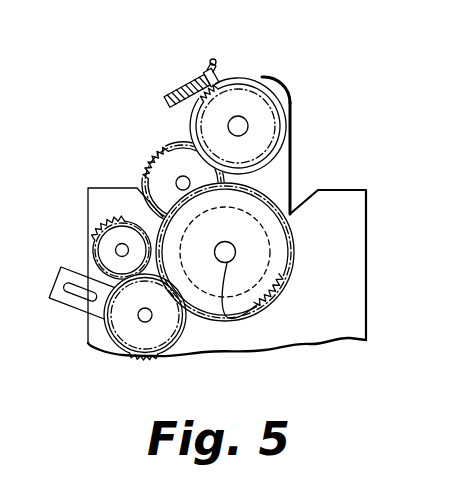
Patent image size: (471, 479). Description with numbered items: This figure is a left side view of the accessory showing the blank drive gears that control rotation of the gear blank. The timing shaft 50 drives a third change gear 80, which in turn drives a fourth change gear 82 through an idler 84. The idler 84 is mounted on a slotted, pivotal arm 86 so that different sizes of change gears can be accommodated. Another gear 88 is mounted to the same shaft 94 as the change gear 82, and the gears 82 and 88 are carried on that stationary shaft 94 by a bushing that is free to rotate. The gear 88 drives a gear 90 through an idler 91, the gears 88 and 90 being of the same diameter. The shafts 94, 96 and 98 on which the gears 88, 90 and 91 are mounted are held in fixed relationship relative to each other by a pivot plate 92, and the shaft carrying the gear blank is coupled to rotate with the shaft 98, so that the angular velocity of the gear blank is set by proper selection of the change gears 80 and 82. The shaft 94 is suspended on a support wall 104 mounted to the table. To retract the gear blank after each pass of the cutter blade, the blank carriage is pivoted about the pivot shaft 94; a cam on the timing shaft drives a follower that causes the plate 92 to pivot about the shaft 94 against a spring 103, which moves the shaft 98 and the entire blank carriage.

The timing shaft 50 is at (128, 219).
The third change gear 80 is at (105, 221).
The fourth change gear 82 is at (282, 279).
The idler 84 is at (126, 355).
The slotted, pivotal arm 86 is at (75, 267).
The gear 88 is at (268, 244).
The gear 90 is at (291, 90).
The idler 91 is at (150, 165).
The pivot plate 92 is at (293, 157).
The shaft 94 is at (257, 317).
The shaft 96 is at (183, 176).
The shaft 98 is at (241, 116).
The spring 103 is at (190, 87).
The support wall 104 is at (367, 321).